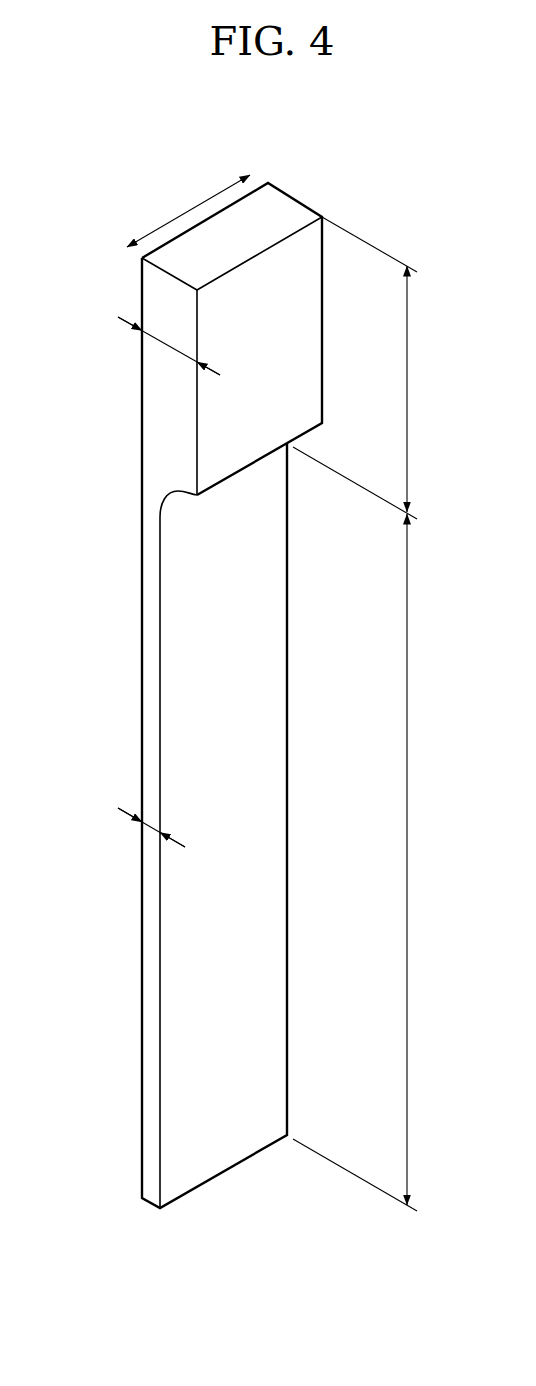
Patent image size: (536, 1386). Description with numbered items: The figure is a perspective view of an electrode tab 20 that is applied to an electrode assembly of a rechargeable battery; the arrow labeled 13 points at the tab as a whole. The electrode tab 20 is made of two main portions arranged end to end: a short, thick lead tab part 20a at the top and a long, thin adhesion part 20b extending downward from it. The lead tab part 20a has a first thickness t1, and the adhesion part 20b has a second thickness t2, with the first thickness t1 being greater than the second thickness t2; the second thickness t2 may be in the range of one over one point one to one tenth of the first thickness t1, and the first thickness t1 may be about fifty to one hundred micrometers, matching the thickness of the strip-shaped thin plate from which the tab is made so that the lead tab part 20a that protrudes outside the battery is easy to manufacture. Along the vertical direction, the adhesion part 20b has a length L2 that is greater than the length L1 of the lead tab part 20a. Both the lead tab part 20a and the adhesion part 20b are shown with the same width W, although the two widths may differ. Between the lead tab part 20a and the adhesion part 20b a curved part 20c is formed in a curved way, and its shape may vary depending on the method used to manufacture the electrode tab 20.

The electrode tab 20 is at (268, 118).
The electrode assembly tab region 13 is at (313, 179).
The lead tab part 20a is at (313, 301).
The adhesion part 20b is at (275, 792).
The curved part 20c is at (160, 513).
The width W is at (188, 211).
The first thickness t1 is at (168, 347).
The second thickness t2 is at (153, 827).
The length of the lead tab part L1 is at (364, 368).
The length of the adhesion part L2 is at (364, 862).